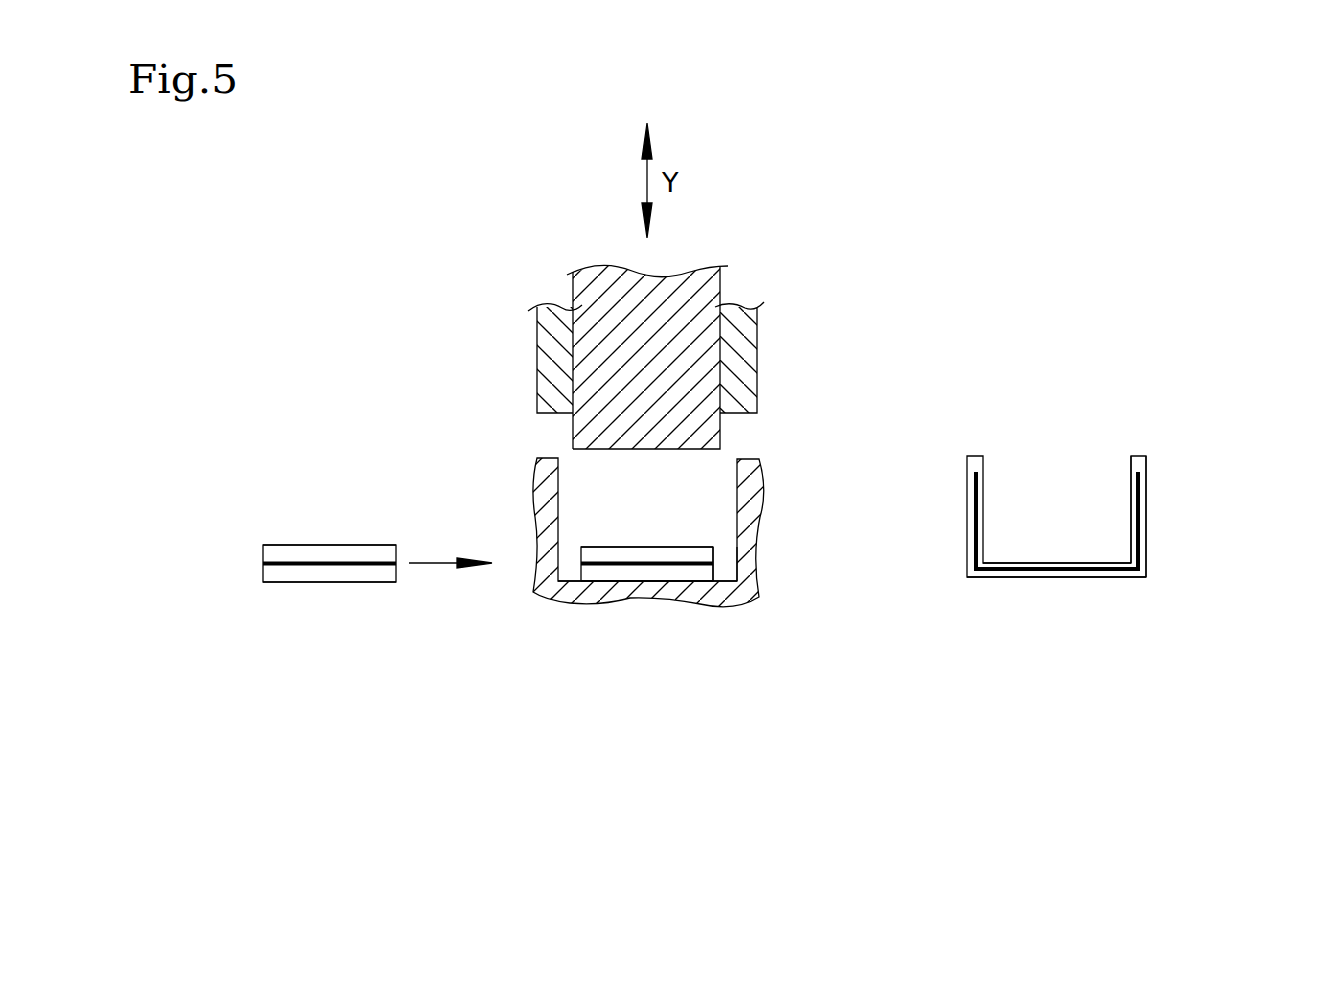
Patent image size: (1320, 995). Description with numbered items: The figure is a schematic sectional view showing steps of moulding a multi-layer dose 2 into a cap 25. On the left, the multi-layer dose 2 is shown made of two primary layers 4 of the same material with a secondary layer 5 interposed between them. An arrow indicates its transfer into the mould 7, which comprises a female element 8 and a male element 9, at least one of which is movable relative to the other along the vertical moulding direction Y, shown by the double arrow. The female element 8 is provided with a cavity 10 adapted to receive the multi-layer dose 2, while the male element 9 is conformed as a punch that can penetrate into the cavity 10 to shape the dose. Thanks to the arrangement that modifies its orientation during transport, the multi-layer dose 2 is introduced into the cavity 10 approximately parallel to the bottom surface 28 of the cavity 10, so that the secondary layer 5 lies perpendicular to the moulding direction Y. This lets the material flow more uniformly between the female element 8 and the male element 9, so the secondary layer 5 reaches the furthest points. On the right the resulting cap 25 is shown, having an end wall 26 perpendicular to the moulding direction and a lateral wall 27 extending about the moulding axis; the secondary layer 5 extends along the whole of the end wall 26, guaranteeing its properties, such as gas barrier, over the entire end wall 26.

The multi-layer dose 2 is at (327, 545).
The primary layer 4 is at (292, 553).
The secondary layer 5 is at (263, 563).
The mould 7 is at (805, 308).
The female element 8 is at (740, 602).
The male element 9 is at (537, 355).
The cavity 10 is at (572, 576).
The cap 25 is at (1057, 608).
The end wall 26 is at (1103, 578).
The lateral wall 27 is at (1147, 497).
The bottom surface 28 is at (723, 575).